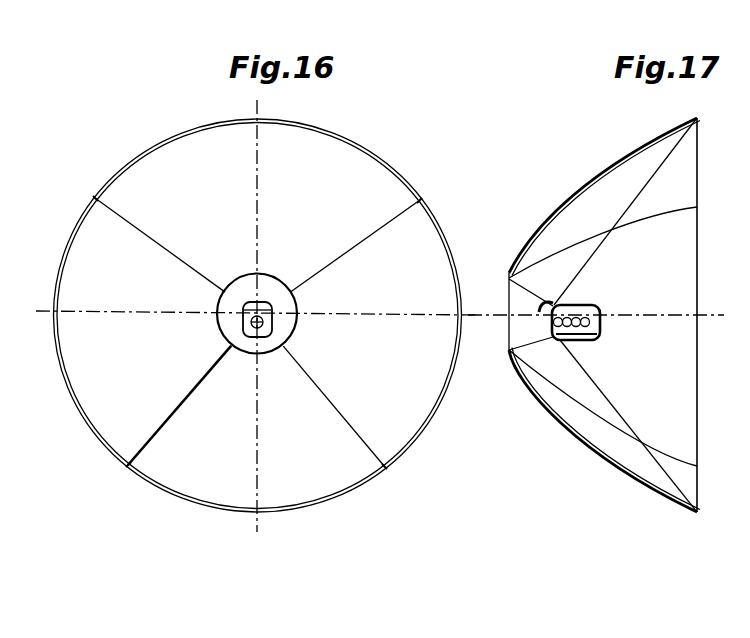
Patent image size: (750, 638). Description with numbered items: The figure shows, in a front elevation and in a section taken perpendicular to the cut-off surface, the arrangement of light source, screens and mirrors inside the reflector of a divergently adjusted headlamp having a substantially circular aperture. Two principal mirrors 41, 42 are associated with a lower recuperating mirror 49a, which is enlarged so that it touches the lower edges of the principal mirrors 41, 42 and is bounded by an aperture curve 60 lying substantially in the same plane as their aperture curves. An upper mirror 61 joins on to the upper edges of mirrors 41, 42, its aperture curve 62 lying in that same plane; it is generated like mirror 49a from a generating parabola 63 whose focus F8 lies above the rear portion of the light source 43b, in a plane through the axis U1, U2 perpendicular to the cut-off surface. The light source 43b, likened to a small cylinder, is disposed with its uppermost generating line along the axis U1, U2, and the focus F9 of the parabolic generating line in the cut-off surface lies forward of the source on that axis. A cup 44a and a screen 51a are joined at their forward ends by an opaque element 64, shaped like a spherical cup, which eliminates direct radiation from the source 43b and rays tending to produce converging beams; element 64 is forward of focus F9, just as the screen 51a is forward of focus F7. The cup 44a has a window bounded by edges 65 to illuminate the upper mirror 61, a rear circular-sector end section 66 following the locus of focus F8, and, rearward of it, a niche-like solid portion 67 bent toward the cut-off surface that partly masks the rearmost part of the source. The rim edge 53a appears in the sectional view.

In FIG. 16, the principal mirror 41 is at (96, 406).
In FIG. 16, the principal mirror 42 is at (409, 428).
In FIG. 17, the principal mirror 42 is at (684, 394).
In FIG. 16, the light source 43b is at (272, 324).
In FIG. 17, the light source 43b is at (603, 326).
In FIG. 17, the cup 44a is at (600, 303).
In FIG. 16, the lower recuperating mirror 49a is at (329, 490).
In FIG. 17, the lower recuperating mirror 49a is at (611, 454).
In FIG. 17, the screen 51a is at (588, 342).
In FIG. 17, the rim edge 53a is at (656, 492).
In FIG. 16, the aperture curve 60 is at (216, 508).
In FIG. 17, the aperture curve 60 is at (698, 493).
In FIG. 16, the upper mirror 61 is at (380, 184).
In FIG. 17, the upper mirror 61 is at (645, 158).
In FIG. 16, the aperture curve 62 is at (328, 127).
In FIG. 17, the aperture curve 62 is at (698, 153).
In FIG. 17, the generating parabola 63 is at (575, 198).
In FIG. 17, the opaque element 64 is at (600, 340).
In FIG. 17, the window edges 65 is at (595, 303).
In FIG. 17, the end section 66 is at (550, 333).
In FIG. 17, the solid portion 67 is at (548, 306).
In FIG. 16, the focus F7 is at (252, 340).
In FIG. 17, the focus F7 is at (561, 341).
In FIG. 16, the focus of generating parabola F8 is at (260, 306).
In FIG. 17, the focus of generating parabola F8 is at (566, 305).
In FIG. 17, the focus F9 is at (603, 314).
In FIG. 16, the axis U1 is at (266, 312).
In FIG. 17, the axis U1 is at (719, 305).
In FIG. 16, the axis U2 is at (370, 292).
In FIG. 17, the axis U2 is at (505, 319).